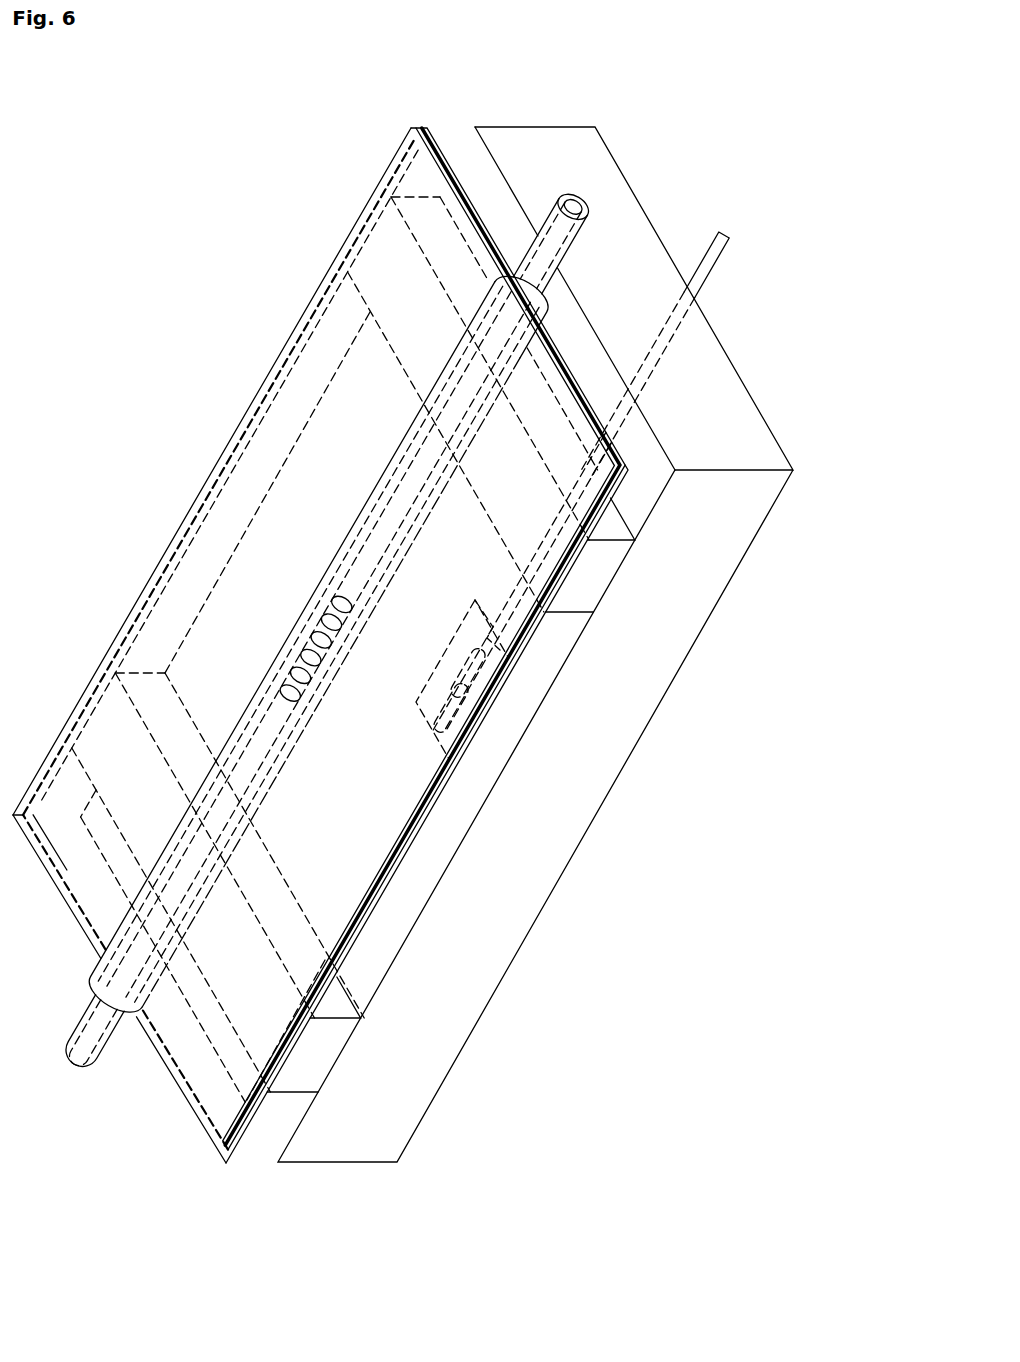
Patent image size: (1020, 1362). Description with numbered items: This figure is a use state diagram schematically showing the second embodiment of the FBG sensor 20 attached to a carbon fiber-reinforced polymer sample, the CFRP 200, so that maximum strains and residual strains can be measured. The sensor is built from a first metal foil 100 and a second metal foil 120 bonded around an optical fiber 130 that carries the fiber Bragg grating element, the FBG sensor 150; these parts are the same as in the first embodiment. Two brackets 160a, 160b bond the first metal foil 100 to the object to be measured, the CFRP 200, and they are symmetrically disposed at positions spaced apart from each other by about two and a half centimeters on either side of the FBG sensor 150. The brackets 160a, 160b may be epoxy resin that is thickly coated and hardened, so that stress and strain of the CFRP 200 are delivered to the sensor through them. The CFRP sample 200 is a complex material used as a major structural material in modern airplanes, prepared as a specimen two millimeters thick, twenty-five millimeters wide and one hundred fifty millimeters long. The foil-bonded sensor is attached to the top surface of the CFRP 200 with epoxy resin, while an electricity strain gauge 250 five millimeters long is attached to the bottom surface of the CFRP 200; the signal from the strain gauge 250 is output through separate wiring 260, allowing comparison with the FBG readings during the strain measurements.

The FBG sensor 20 is at (134, 481).
The first metal foil 100 is at (280, 428).
The second metal foil 120 is at (430, 128).
The optical fiber 130 is at (578, 242).
The FBG sensor 150 is at (283, 697).
The bracket 160a is at (312, 1068).
The bracket 160b is at (590, 577).
The CFRP sample 200 is at (522, 932).
The electricity strain gauge 250 is at (490, 727).
The wiring 260 is at (733, 245).